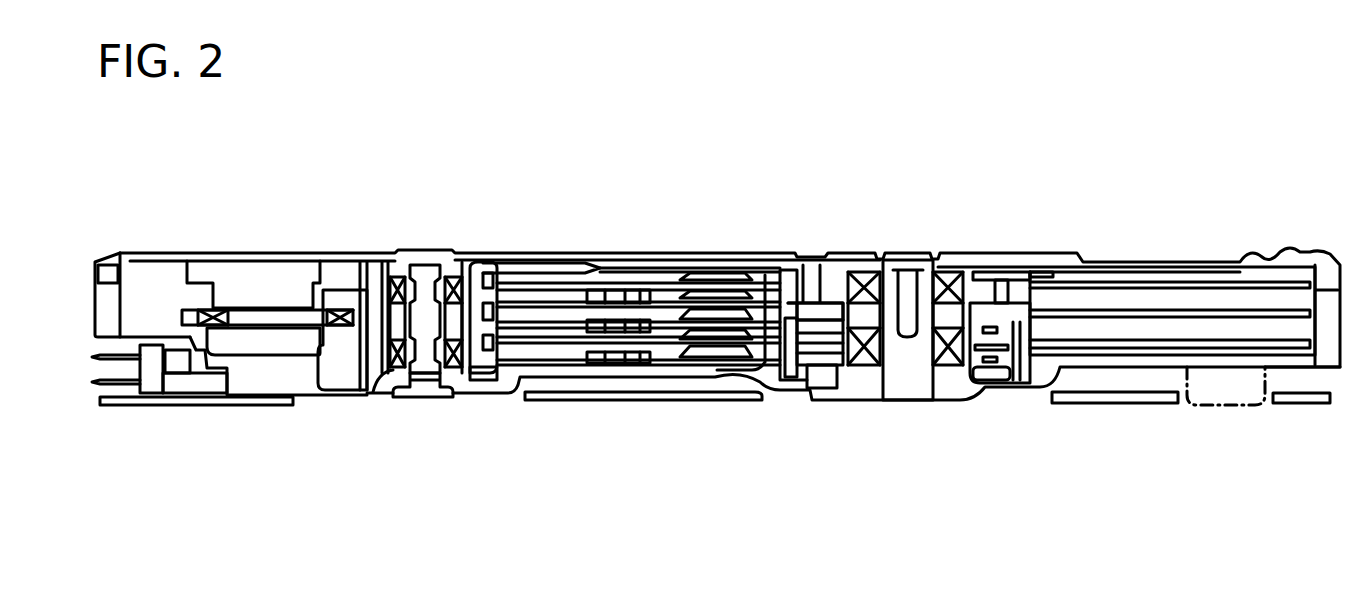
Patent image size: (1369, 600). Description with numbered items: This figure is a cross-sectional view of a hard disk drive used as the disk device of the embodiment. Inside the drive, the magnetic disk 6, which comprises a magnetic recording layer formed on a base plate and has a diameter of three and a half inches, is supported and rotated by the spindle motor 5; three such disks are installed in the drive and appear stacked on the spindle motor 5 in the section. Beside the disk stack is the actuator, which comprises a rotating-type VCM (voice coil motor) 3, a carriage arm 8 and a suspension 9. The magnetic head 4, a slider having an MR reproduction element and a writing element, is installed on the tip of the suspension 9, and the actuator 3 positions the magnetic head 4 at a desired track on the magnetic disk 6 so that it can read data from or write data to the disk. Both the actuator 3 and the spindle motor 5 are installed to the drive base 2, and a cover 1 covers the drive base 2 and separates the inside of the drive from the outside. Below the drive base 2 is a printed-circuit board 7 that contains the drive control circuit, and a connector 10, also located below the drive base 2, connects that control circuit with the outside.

The cover 1 is at (152, 253).
The drive base 2 is at (307, 402).
The VCM (voice coil motor) 3 is at (385, 392).
The magnetic head 4 is at (640, 257).
The spindle motor 5 is at (960, 372).
The magnetic disk 6 is at (1183, 280).
The printed-circuit board 7 is at (193, 407).
The carriage arm 8 is at (508, 252).
The suspension 9 is at (615, 257).
The connector 10 is at (120, 405).